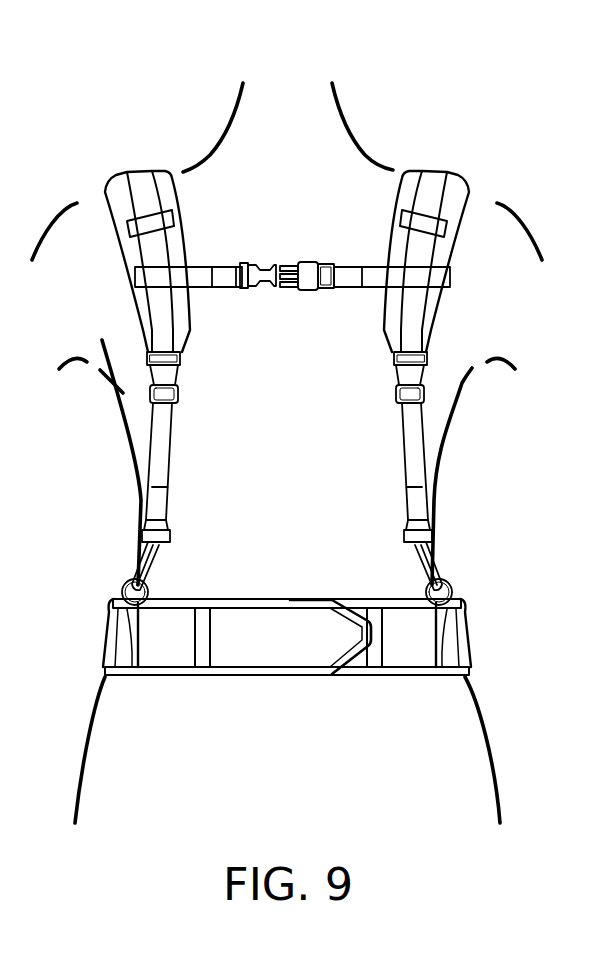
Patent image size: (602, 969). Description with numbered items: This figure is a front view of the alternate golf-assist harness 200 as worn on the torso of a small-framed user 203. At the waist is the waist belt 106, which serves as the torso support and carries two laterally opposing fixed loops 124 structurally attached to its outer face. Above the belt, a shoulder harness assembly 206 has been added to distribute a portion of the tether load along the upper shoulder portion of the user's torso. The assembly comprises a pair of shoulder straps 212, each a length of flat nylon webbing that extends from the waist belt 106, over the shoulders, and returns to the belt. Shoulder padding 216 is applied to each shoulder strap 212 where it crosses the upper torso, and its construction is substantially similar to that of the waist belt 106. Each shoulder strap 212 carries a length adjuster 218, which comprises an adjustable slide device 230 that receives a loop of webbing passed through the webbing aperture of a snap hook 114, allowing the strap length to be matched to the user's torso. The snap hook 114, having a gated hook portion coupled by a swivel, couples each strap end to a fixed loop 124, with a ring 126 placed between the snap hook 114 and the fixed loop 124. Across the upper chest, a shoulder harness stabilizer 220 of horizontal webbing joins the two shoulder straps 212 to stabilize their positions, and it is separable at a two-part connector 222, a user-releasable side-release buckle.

The alternate golf-assist harness 200 is at (324, 336).
The user 203 is at (528, 227).
The shoulder harness assembly 206 is at (324, 360).
The shoulder padding 216 is at (167, 170).
The length adjuster 218 is at (287, 461).
The shoulder strap 212 is at (152, 452).
The shoulder harness stabilizer 220 is at (292, 268).
The two-part connector 222 is at (320, 262).
The adjustable slide device 230 is at (178, 400).
The snap hook 114 is at (162, 553).
The ring 126 is at (122, 590).
The fixed loop 124 is at (123, 632).
The waist belt 106 is at (362, 676).